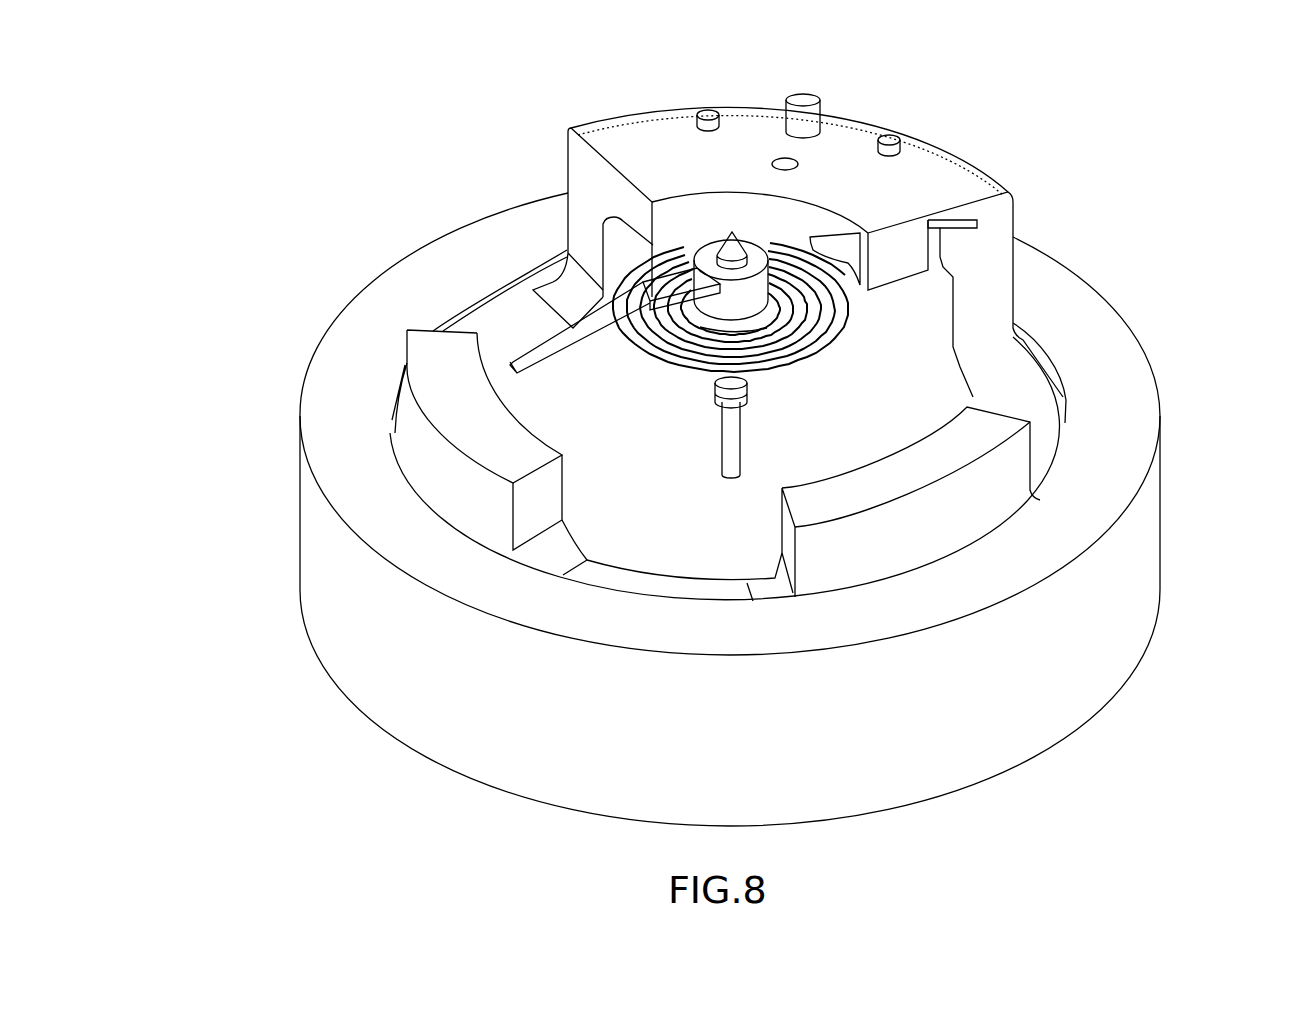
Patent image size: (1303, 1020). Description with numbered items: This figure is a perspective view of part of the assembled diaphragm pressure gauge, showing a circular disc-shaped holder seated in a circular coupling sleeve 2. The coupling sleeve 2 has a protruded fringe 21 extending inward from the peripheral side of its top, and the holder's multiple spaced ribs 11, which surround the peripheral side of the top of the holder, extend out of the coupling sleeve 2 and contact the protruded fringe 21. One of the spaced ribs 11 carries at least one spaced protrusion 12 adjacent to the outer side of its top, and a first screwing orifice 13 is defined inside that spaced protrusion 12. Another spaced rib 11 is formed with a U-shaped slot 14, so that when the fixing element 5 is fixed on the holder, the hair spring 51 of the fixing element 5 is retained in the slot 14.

The coupling sleeve 2 is at (1085, 647).
The protruded fringe 21 is at (393, 433).
The spaced ribs 11 is at (432, 343).
The spaced protrusion 12 is at (707, 113).
The first screwing orifice 13 is at (784, 160).
The slot 14 is at (962, 262).
The fixing element 5 is at (828, 362).
The hair spring 51 is at (860, 306).